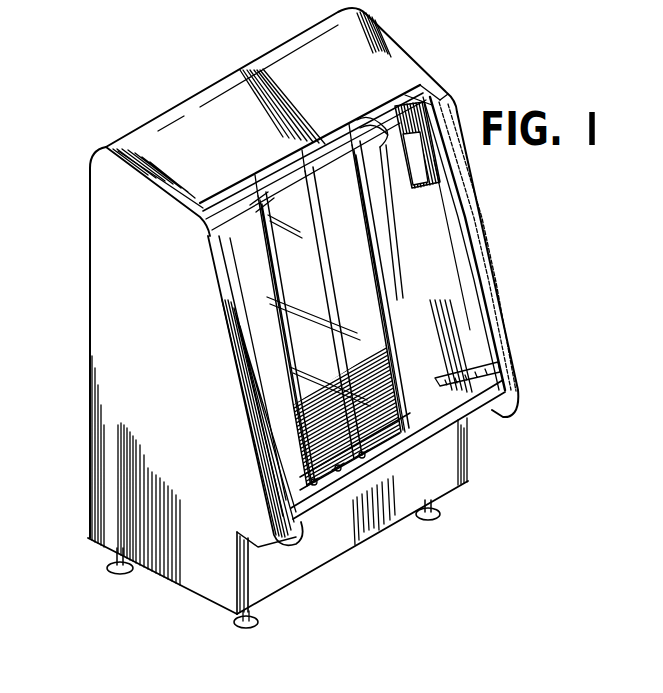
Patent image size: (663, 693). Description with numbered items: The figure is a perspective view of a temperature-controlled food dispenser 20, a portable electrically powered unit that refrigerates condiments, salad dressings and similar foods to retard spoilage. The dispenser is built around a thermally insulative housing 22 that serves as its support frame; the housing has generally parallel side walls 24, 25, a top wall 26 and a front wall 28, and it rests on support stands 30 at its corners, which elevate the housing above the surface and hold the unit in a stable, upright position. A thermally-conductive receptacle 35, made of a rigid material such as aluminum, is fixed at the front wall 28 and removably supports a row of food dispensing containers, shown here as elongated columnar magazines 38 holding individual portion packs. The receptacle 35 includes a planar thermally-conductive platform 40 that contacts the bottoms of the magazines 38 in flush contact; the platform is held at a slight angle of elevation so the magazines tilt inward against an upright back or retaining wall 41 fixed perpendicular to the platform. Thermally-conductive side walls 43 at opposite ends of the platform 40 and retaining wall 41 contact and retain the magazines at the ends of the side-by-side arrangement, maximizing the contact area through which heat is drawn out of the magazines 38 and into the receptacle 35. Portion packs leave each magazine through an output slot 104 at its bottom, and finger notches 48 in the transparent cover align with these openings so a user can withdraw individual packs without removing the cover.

The temperature-controlled food dispenser 20 is at (84, 287).
The thermally insulative housing 22 is at (90, 202).
The side wall 24 is at (106, 345).
The side wall 25 is at (497, 314).
The top wall 26 is at (363, 43).
The front wall 28 is at (440, 464).
The support stands 30 is at (437, 508).
The thermally-conductive receptacle 35 is at (448, 279).
The magazines 38 is at (360, 128).
The thermally-conductive platform 40 is at (493, 417).
The back or retaining wall 41 is at (473, 388).
The side walls of the receptacle 43 is at (473, 344).
The finger notches 48 is at (347, 480).
The output slot 104 is at (382, 447).